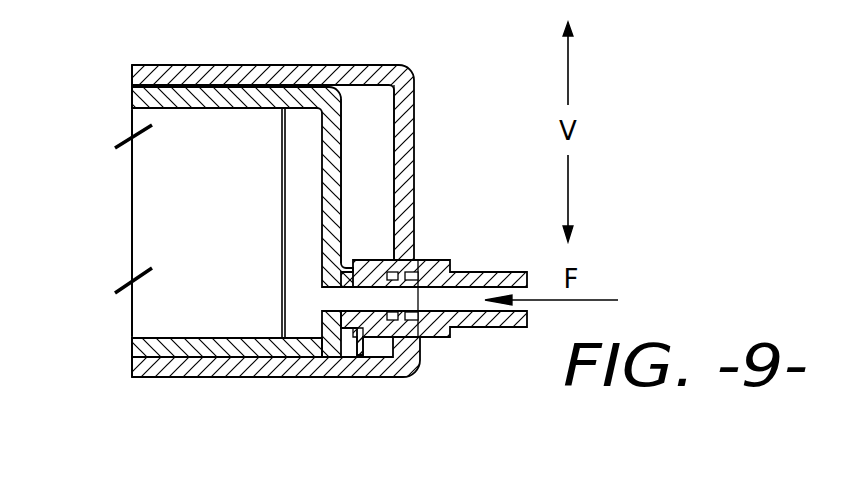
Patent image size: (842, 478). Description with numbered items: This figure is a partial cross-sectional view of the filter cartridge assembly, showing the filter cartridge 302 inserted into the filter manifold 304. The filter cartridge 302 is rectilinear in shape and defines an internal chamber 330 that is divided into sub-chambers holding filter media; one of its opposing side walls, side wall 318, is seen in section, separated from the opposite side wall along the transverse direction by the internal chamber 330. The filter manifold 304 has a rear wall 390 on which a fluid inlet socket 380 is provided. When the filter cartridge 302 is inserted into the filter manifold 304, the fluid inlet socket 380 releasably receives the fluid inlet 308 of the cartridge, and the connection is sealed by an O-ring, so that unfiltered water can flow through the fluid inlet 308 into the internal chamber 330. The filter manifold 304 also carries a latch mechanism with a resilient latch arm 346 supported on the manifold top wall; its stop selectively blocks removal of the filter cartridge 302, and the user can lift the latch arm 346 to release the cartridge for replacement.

The filter cartridge 302 is at (142, 98).
The filter manifold 304 is at (305, 65).
The side wall 318 is at (322, 148).
The internal chamber 330 is at (174, 210).
The rear wall 390 is at (415, 143).
The fluid inlet socket 380 is at (437, 258).
The resilient latch arm 346 is at (393, 325).
The fluid inlet 308 is at (370, 335).